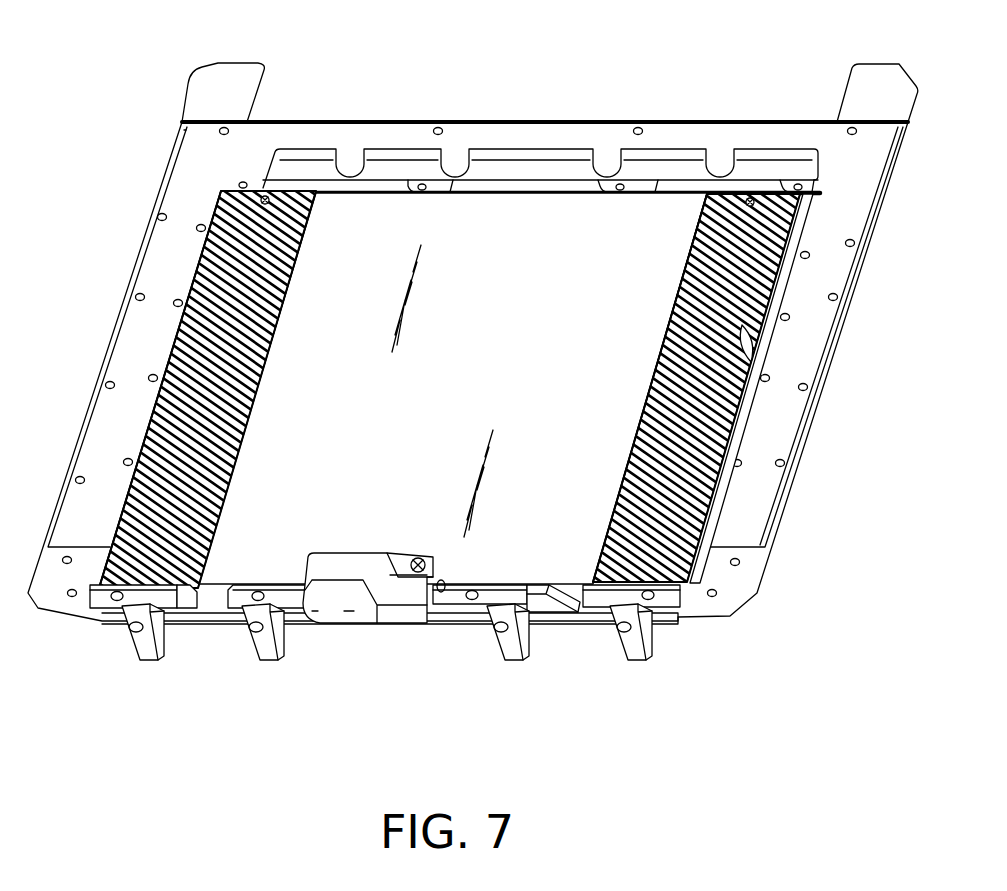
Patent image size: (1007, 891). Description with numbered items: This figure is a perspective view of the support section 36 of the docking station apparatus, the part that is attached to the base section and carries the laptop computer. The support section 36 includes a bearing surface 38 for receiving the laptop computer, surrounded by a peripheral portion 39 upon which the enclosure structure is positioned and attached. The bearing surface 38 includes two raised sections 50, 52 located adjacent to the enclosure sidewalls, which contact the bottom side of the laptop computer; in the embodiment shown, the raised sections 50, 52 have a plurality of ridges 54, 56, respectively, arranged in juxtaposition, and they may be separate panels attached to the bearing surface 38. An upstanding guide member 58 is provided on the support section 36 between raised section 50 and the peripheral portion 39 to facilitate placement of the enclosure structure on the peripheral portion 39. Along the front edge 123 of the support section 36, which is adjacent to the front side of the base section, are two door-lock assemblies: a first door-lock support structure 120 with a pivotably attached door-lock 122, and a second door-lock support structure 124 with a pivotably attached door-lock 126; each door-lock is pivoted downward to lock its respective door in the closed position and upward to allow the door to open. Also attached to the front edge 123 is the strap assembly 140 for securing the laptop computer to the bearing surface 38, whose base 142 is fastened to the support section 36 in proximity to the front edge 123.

The support section 36 is at (548, 120).
The bearing surface 38 is at (452, 388).
The peripheral portion 39 is at (363, 135).
The raised section 50 is at (690, 320).
The raised section 52 is at (270, 307).
The ridges 54 is at (613, 502).
The ridges 56 is at (193, 503).
The upstanding guide member 58 is at (749, 350).
The door-lock support structure 120 is at (207, 598).
The door-lock 122 is at (133, 653).
The front edge 123 is at (550, 618).
The door-lock support structure 124 is at (565, 604).
The door-lock 126 is at (510, 653).
The strap assembly 140 is at (381, 630).
The base 142 is at (431, 627).